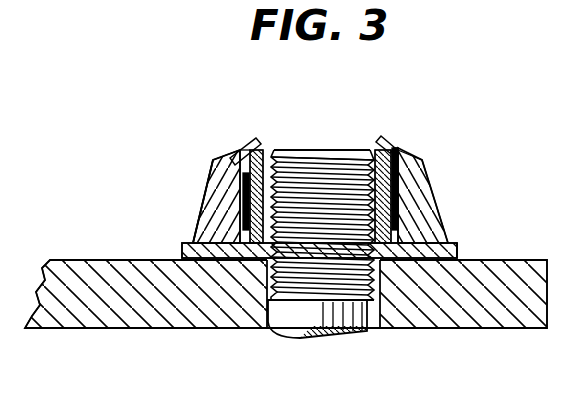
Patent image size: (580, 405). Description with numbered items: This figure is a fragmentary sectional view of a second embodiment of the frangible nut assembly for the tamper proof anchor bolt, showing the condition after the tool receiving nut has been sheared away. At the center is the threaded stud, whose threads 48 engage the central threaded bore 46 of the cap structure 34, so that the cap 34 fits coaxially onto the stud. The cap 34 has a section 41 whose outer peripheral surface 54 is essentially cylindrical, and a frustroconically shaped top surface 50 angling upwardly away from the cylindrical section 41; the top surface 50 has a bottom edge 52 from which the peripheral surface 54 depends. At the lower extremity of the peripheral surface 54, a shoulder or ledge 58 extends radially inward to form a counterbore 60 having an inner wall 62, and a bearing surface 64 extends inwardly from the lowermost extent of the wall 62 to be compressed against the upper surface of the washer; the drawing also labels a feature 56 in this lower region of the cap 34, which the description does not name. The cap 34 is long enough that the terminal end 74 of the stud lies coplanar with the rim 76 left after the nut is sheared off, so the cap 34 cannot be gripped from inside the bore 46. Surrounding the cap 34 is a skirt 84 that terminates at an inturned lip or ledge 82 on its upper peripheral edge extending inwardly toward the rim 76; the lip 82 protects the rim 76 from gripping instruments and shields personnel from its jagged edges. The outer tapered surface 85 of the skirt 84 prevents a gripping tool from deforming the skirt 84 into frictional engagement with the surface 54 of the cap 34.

The cap structure 34 is at (427, 207).
The section 41 is at (422, 160).
The central threaded bore 46 is at (371, 149).
The threads 48 is at (318, 163).
The frustroconically shaped top surface 50 is at (396, 150).
The bottom edge 52 is at (254, 142).
The outer peripheral surface 54 is at (410, 173).
The wedge bottom 56 is at (443, 240).
The shoulder or ledge 58 is at (245, 228).
The counterbore 60 is at (245, 258).
The inner wall 62 is at (233, 258).
The bearing surface 64 is at (457, 248).
The terminal end 74 is at (338, 165).
The rim 76 is at (274, 150).
The inturned lip or ledge 82 is at (250, 145).
The skirt 84 is at (216, 196).
The outer tapered surface 85 is at (208, 192).